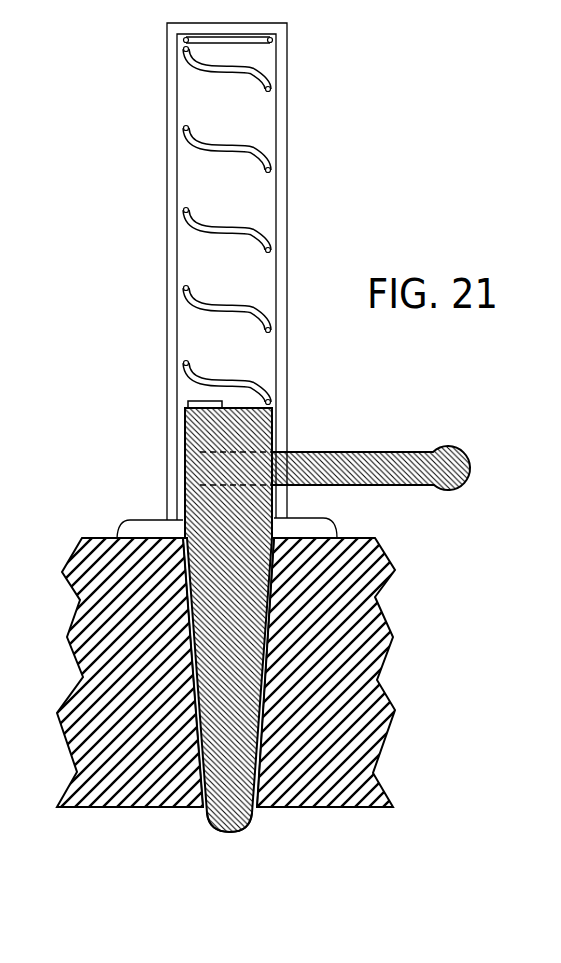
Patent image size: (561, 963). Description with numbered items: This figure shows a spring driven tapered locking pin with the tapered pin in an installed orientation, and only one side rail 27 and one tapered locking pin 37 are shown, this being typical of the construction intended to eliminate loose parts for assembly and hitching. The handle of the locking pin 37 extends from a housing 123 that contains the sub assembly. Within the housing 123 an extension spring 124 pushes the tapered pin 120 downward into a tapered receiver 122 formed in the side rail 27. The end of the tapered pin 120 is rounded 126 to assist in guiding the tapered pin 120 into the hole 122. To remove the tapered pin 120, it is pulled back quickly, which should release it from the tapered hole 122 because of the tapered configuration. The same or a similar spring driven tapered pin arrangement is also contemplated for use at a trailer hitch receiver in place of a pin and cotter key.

The side rail 27 is at (385, 582).
The tapered locking pin 37 is at (462, 485).
The tapered pin 120 is at (188, 580).
The tapered receiver 122 is at (262, 790).
The housing 123 is at (167, 332).
The extension spring 124 is at (190, 132).
The rounded end 126 is at (217, 828).